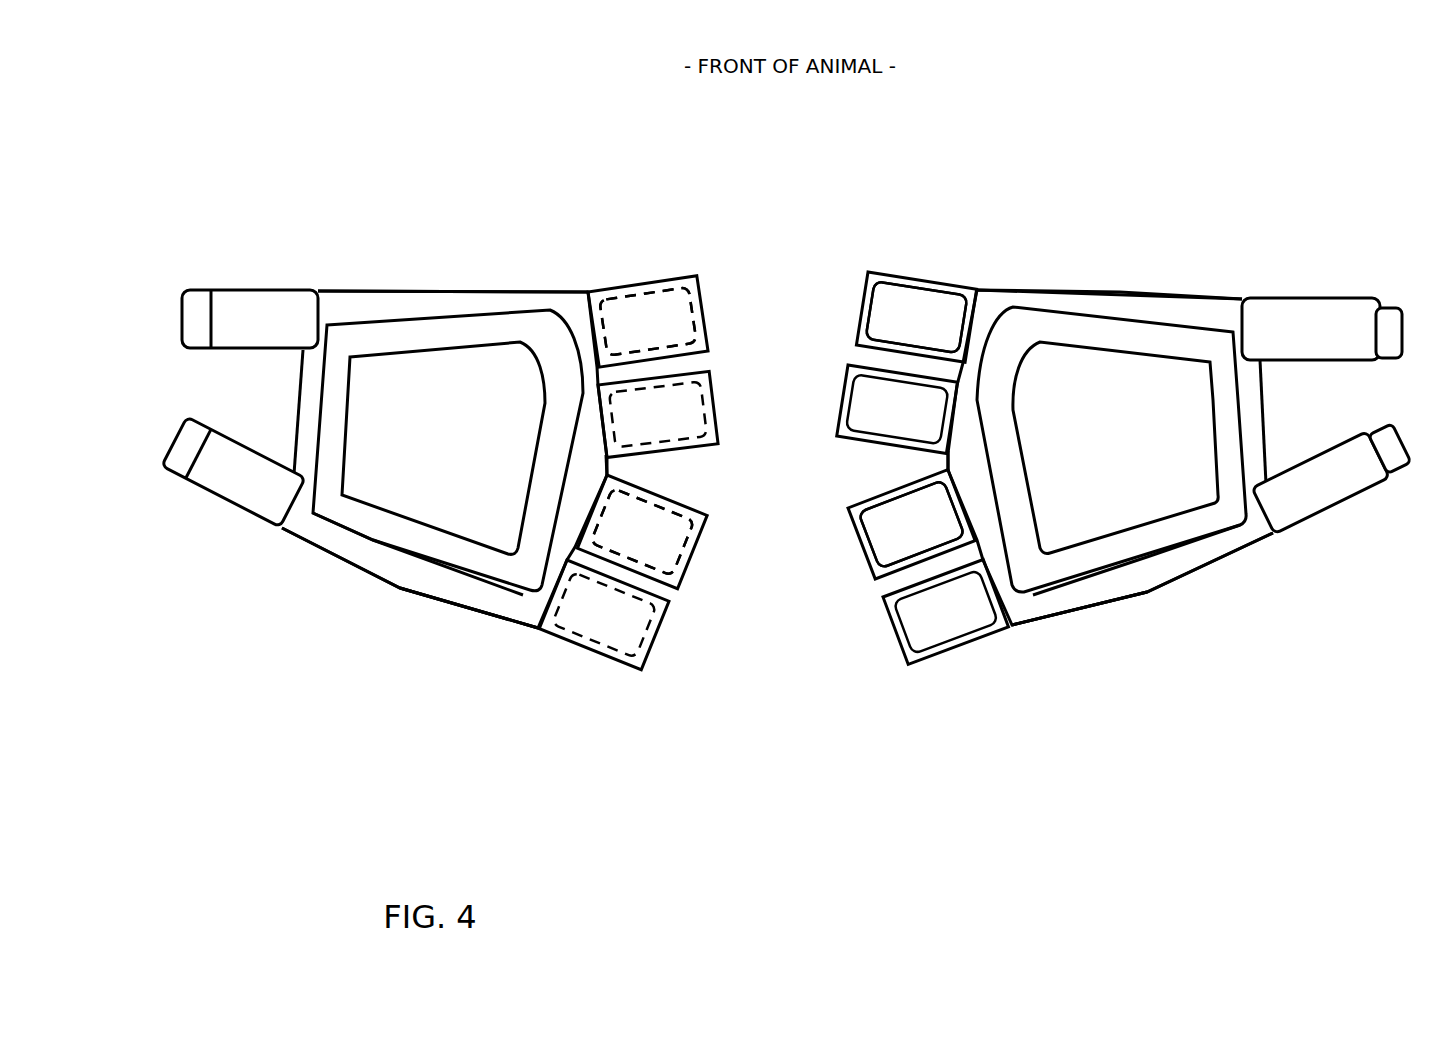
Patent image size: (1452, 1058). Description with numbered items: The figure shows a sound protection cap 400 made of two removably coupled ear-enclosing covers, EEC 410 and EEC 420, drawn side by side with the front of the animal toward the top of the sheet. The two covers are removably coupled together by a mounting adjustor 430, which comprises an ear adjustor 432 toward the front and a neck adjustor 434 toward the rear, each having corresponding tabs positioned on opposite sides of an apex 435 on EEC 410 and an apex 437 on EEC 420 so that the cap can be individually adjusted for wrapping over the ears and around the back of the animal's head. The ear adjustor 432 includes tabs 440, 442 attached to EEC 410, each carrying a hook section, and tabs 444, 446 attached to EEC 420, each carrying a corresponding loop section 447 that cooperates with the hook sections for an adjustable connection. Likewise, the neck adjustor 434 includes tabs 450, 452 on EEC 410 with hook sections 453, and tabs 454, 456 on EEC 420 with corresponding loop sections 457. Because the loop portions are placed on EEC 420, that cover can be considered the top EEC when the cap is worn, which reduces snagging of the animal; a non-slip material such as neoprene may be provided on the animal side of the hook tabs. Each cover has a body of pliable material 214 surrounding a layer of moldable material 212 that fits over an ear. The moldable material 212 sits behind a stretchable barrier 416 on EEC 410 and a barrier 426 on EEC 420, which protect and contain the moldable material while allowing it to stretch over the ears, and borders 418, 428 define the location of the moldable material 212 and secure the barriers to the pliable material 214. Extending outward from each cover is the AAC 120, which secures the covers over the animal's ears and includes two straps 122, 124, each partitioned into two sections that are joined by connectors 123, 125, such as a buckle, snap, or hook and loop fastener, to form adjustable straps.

The sound protection cap 400 is at (343, 92).
The EEC 410 is at (430, 252).
The EEC 420 is at (1106, 272).
The mounting adjustor 430 is at (310, 587).
The ear adjustor 432 is at (845, 236).
The neck adjustor 434 is at (815, 683).
The apex 435 is at (608, 467).
The apex 437 is at (947, 463).
The tab 440 is at (700, 313).
The tab 442 is at (715, 400).
The tab 444 is at (858, 335).
The tab 446 is at (846, 430).
The loop section 447 is at (892, 332).
The tab 450 is at (700, 543).
The tab 452 is at (663, 630).
The hook section 453 is at (622, 544).
The tab 454 is at (863, 549).
The tab 456 is at (893, 633).
The loop section 457 is at (894, 539).
The barrier 416 is at (388, 502).
The border 418 is at (472, 568).
The barrier 426 is at (1195, 497).
The border 428 is at (1127, 555).
The moldable material 212 is at (415, 449).
The pliable material 214 is at (328, 316).
The AAC 120 is at (168, 588).
The strap 122 is at (247, 513).
The connector 123 is at (160, 467).
The strap 124 is at (272, 290).
The connector 125 is at (197, 290).